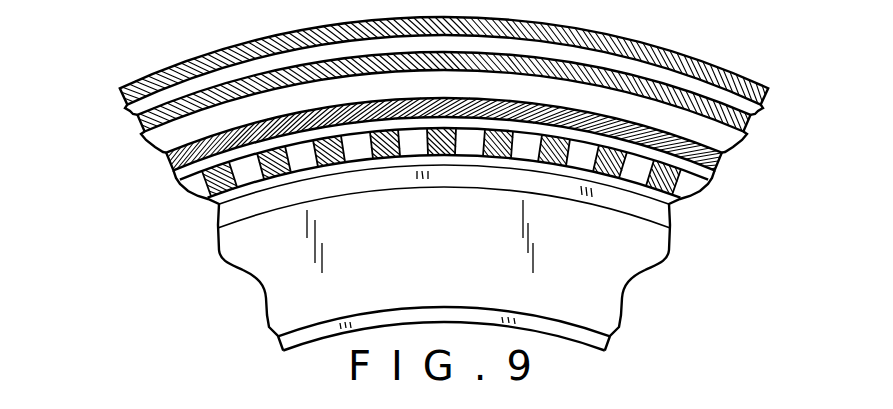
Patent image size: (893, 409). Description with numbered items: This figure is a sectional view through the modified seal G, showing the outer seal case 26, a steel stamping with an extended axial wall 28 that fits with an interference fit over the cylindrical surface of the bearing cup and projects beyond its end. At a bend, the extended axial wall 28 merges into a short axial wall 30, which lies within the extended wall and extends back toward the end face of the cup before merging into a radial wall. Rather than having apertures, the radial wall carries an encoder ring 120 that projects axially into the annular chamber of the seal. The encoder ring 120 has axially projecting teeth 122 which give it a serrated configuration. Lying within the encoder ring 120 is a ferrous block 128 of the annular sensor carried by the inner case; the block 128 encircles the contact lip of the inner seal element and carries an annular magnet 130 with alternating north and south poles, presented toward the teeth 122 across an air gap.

The outer seal case 26 is at (172, 67).
The extended axial wall 28 is at (683, 55).
The short axial wall 30 is at (722, 113).
The encoder ring 120 is at (410, 140).
The teeth 122 is at (230, 251).
The ferrous block 128 is at (633, 248).
The annular magnet 130 is at (668, 217).